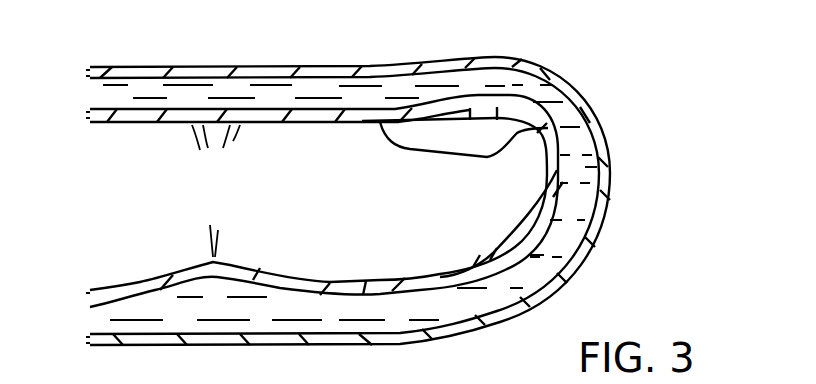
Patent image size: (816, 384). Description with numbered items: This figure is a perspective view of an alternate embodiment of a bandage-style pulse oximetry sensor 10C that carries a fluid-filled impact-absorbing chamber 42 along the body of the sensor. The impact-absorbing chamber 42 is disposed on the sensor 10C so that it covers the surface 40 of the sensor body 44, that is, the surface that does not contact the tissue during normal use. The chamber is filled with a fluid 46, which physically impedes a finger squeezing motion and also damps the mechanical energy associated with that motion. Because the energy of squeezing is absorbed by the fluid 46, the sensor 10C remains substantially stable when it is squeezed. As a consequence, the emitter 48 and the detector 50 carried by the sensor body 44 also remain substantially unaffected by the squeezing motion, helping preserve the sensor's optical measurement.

The sensor 10C is at (668, 96).
The surface 40 is at (396, 62).
The impact-absorbing chamber 42 is at (126, 72).
The sensor body 44 is at (145, 122).
The fluid 46 is at (598, 165).
The emitter 48 is at (486, 110).
The detector 50 is at (488, 258).